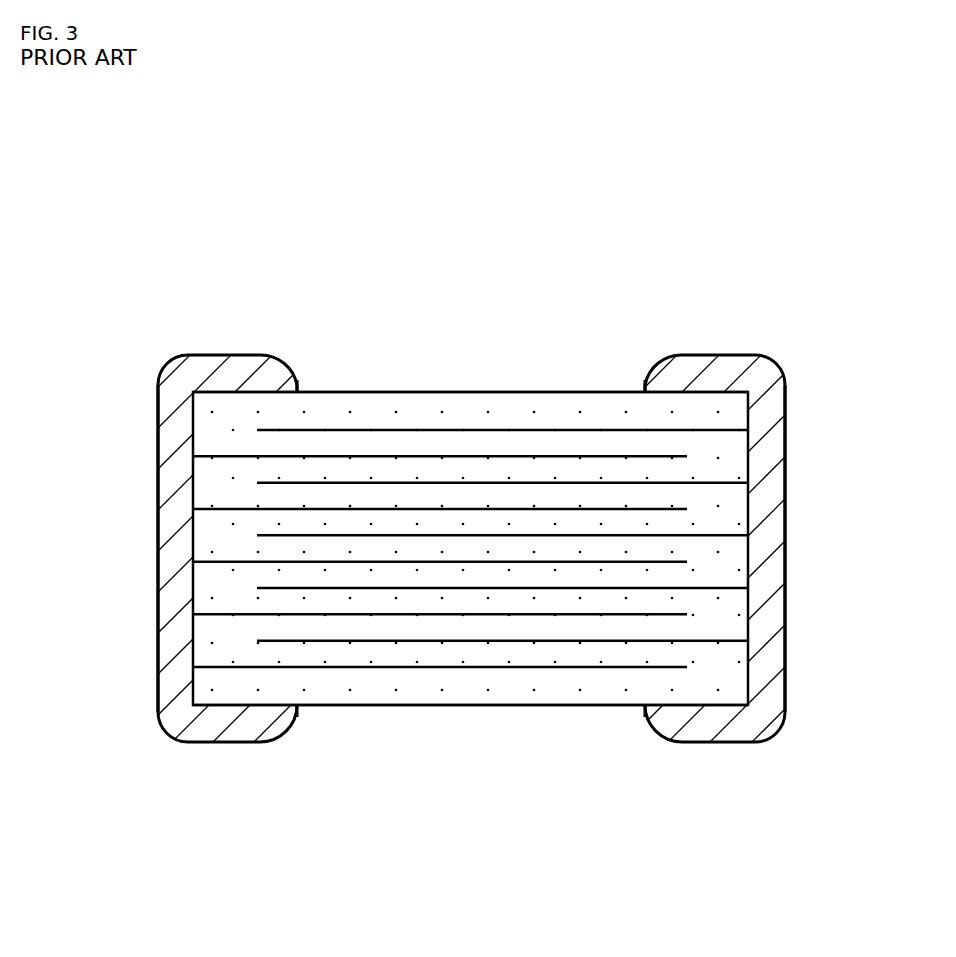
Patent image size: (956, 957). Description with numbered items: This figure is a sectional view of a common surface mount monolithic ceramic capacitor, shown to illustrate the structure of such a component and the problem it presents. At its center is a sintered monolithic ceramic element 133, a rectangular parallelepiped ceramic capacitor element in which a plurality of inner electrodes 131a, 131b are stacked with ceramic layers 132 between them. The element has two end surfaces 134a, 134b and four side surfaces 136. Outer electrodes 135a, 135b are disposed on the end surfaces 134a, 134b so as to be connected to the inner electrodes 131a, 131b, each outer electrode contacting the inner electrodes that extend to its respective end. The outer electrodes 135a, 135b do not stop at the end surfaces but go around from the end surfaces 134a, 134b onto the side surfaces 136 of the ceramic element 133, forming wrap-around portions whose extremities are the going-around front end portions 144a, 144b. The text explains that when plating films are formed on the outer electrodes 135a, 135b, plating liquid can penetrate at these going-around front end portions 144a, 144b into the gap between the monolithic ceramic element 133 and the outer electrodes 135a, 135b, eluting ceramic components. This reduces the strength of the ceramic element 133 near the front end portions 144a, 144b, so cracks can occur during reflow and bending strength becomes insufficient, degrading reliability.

The monolithic ceramic element 133 is at (452, 374).
The ceramic layer 132 is at (556, 497).
The inner electrode 131a is at (386, 510).
The inner electrode 131b is at (482, 588).
The end surface 134a is at (193, 598).
The end surface 134b is at (748, 568).
The outer electrode 135a is at (158, 499).
The outer electrode 135b is at (786, 490).
The side surface 136 is at (574, 390).
The going-around front end portion 144a is at (323, 380).
The going-around front end portion 144b is at (622, 380).